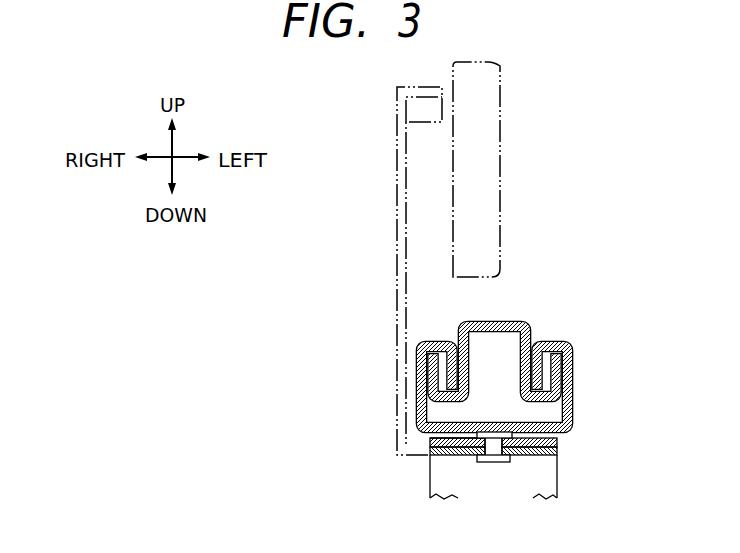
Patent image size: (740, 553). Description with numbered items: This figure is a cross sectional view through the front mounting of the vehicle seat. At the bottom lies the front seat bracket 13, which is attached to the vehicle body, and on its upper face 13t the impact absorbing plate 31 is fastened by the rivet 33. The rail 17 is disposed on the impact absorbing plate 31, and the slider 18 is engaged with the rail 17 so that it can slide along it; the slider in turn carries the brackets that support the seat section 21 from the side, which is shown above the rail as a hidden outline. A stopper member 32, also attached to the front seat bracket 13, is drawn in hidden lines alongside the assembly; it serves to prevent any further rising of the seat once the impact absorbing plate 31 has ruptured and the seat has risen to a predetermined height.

The front seat bracket 13 is at (557, 452).
The upper face of front seat bracket 13t is at (430, 437).
The rail 17 is at (575, 372).
The slider 18 is at (517, 320).
The seat section 21 is at (500, 168).
The impact absorbing plate 31 is at (557, 439).
The stopper member 32 is at (397, 198).
The rivet 33 is at (497, 462).